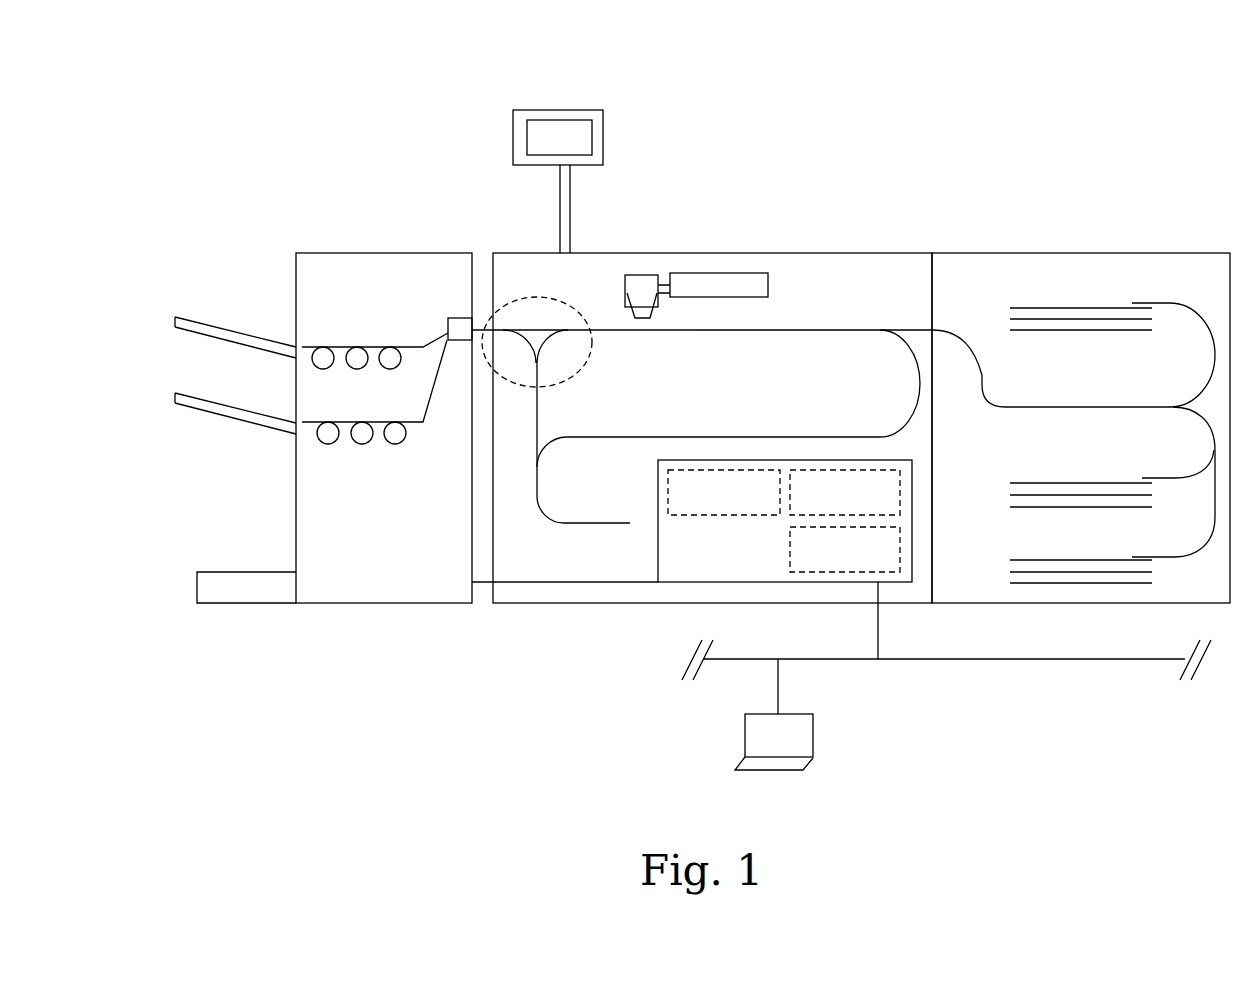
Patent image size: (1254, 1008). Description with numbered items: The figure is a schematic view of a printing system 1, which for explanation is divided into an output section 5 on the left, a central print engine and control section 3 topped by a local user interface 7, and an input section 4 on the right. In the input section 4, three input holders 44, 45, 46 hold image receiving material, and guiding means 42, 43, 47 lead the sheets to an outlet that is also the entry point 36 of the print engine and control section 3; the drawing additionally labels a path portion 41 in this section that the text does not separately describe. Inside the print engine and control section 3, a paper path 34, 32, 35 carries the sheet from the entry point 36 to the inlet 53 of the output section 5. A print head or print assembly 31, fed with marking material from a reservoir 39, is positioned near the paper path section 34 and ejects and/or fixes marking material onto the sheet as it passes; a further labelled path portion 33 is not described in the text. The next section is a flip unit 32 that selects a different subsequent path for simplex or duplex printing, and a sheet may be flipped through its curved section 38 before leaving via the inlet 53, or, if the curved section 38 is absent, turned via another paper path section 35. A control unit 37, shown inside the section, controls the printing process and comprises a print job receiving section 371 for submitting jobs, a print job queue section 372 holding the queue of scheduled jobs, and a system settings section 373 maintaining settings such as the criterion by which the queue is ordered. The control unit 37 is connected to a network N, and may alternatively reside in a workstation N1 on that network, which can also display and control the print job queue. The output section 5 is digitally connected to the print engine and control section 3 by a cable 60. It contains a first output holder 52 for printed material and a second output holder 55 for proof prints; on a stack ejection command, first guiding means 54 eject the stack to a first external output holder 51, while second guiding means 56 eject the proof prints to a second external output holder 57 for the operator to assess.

The printing system 1 is at (350, 110).
The print engine and control section 3 is at (522, 263).
The input section 4 is at (987, 260).
The output section 5 is at (355, 260).
The local user interface 7 is at (522, 115).
The print head or print assembly 31 is at (640, 278).
The flip unit 32 is at (572, 375).
The conveyance path 33 is at (715, 332).
The paper path section 34 is at (838, 328).
The paper path section 35 is at (793, 435).
The entry point 36 is at (920, 328).
The control unit 37 is at (658, 550).
The curved section 38 is at (527, 348).
The reservoir 39 is at (685, 275).
The conveyance path 41 is at (1027, 307).
The guiding means 42 is at (1215, 350).
The guiding means 43 is at (1207, 437).
The input holder 44 is at (1012, 485).
The input holder 45 is at (1020, 570).
The input holder 46 is at (1020, 318).
The guiding means 47 is at (1215, 520).
The first external output holder 51 is at (210, 325).
The first output holder 52 is at (410, 347).
The inlet 53 is at (457, 317).
The first guiding means 54 is at (323, 350).
The second output holder 55 is at (405, 420).
The second guiding means 56 is at (332, 432).
The second external output holder 57 is at (198, 407).
The cable 60 is at (480, 582).
The network N is at (995, 665).
The workstation N1 is at (813, 743).
The print job receiving section 371 is at (728, 483).
The print job queue section 372 is at (850, 483).
The system settings section 373 is at (825, 560).